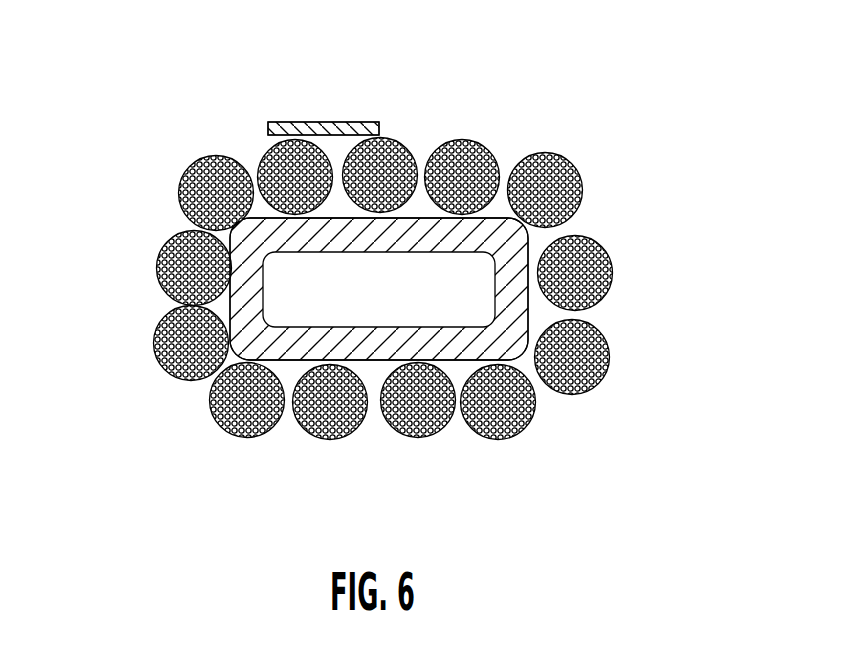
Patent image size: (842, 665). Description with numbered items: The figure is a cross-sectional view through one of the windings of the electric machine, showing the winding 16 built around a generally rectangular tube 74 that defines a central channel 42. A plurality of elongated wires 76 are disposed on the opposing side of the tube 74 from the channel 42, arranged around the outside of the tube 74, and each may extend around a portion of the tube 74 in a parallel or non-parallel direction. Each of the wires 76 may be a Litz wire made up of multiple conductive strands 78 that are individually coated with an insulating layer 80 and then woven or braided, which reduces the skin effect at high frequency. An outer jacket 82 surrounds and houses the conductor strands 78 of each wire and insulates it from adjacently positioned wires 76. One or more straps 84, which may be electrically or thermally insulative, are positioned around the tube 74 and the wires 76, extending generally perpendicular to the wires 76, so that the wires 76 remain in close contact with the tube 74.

The winding 16 is at (212, 110).
The channel 42 is at (434, 266).
The tube 74 is at (566, 172).
The elongated wires 76 is at (460, 165).
The conductive strands 78 is at (503, 272).
The insulating layer 80 is at (462, 150).
The outer jacket 82 is at (200, 153).
The straps 84 is at (277, 121).